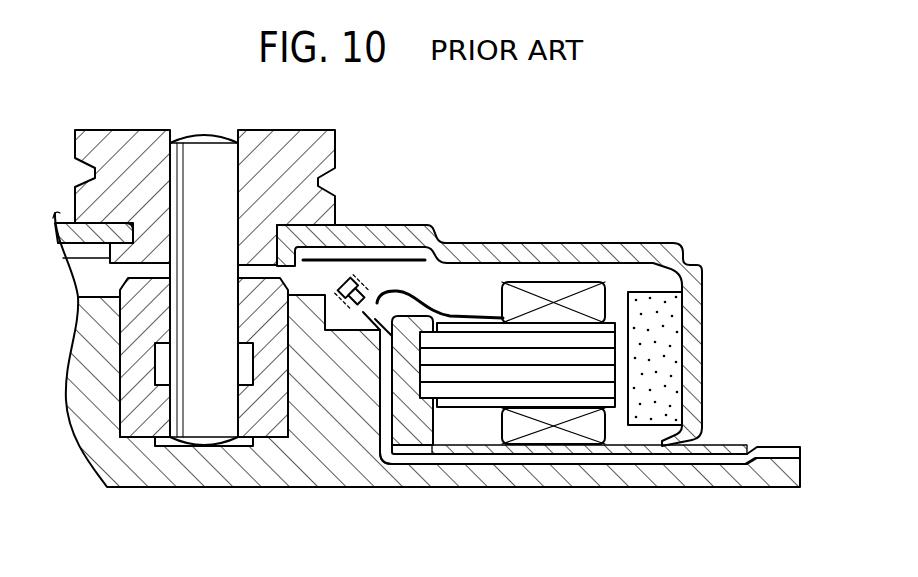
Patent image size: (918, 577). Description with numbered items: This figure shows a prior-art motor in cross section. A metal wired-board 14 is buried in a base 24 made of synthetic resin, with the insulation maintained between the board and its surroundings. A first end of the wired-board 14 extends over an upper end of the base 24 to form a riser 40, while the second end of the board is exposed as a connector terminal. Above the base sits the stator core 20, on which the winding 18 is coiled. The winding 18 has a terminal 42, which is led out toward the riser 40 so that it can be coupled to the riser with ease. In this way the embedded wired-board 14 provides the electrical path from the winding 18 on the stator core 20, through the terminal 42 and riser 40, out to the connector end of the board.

The metal wired-board 14 is at (672, 460).
The winding 18 is at (560, 282).
The stator core 20 is at (477, 323).
The base 24 is at (350, 475).
The riser 40 is at (354, 275).
The terminal 42 is at (440, 303).